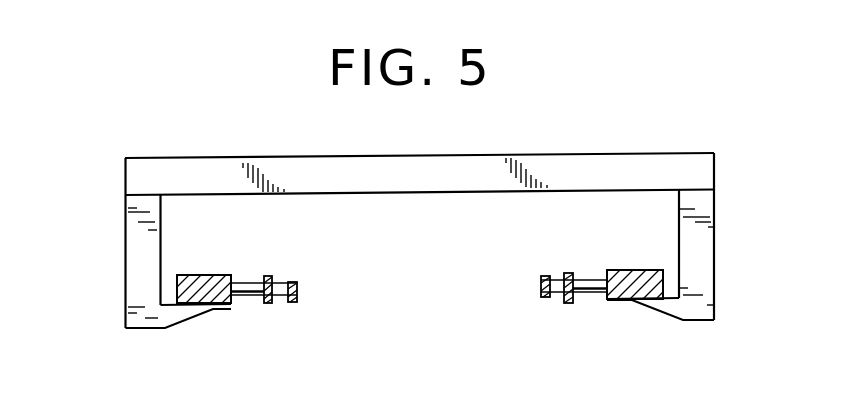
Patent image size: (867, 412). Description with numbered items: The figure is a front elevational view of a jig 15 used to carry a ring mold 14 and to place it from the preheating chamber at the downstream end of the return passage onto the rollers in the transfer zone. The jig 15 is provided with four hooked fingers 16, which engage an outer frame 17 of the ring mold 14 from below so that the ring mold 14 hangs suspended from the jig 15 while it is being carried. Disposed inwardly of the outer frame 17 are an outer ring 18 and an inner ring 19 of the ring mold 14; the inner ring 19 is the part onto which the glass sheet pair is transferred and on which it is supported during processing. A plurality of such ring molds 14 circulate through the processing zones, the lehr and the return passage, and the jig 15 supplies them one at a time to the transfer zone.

The ring mold 14 is at (617, 318).
The jig 15 is at (447, 192).
The hooked fingers 16 is at (132, 240).
The outer frame 17 is at (206, 275).
The outer ring 18 is at (270, 305).
The inner ring 19 is at (302, 303).